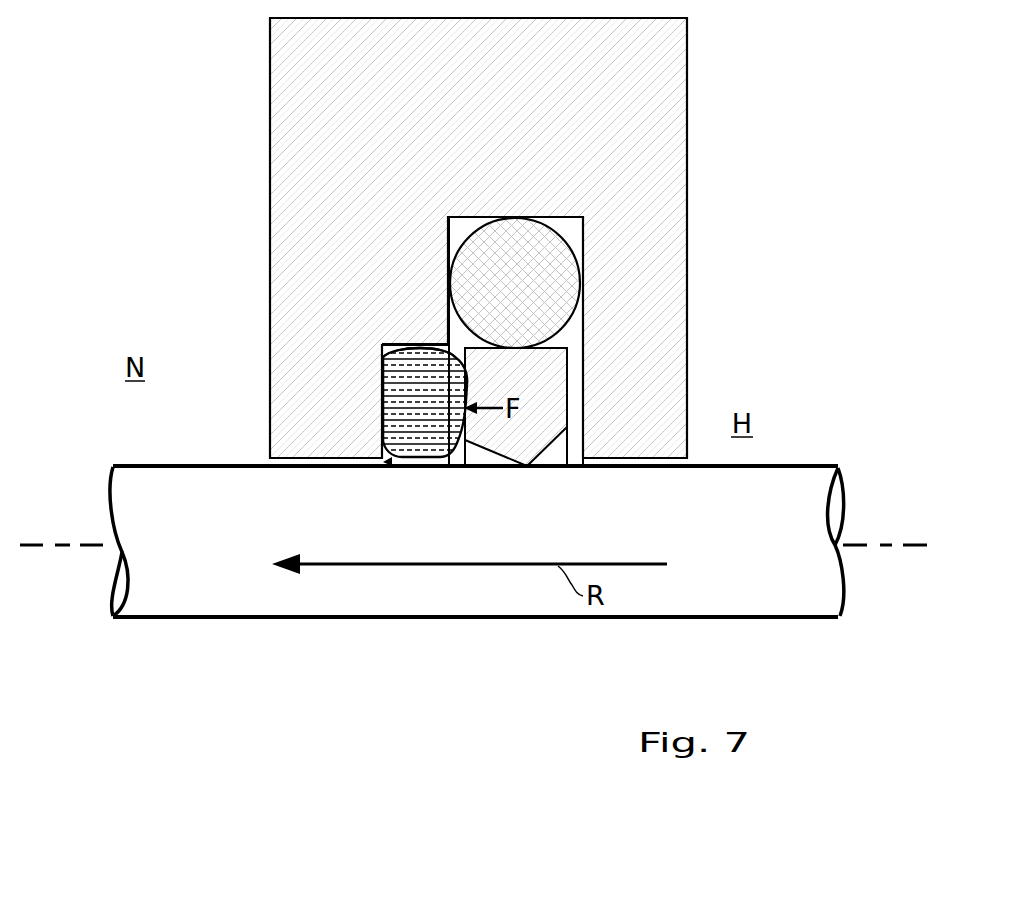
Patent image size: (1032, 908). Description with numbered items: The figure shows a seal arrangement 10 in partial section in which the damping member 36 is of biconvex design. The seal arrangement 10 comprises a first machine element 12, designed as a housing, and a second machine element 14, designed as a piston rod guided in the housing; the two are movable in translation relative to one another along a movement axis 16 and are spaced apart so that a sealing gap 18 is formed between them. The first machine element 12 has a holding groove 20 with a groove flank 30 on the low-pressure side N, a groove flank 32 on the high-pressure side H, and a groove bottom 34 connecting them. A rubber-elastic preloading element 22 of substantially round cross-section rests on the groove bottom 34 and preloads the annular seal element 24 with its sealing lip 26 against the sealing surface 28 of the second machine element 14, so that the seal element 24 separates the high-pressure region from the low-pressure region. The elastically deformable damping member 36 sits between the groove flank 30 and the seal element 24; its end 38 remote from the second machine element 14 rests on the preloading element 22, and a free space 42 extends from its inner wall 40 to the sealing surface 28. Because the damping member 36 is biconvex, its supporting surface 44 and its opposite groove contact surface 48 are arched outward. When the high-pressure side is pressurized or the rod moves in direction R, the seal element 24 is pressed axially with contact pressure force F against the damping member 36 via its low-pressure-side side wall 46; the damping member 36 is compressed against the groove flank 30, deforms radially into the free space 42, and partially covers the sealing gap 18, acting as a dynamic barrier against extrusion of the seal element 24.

The seal arrangement 10 is at (760, 146).
The first machine element 12 is at (470, 162).
The second machine element 14 is at (747, 574).
The movement axis 16 is at (60, 545).
The sealing gap 18 is at (310, 462).
The holding groove 20 is at (572, 368).
The preloading element 22 is at (500, 297).
The seal element 24 is at (515, 390).
The sealing lip 26 is at (514, 450).
The sealing surface 28 is at (745, 466).
The groove flank arranged on the low-pressure side 30 is at (395, 420).
The groove flank arranged on the high-pressure side 32 is at (573, 407).
The groove bottom 34 is at (583, 220).
The damping member 36 is at (425, 402).
The end remote from the second machine element 38 is at (473, 377).
The inner wall 40 is at (420, 423).
The free space 42 is at (367, 465).
The supporting surface 44 is at (457, 360).
The low-pressure-side side wall 46 is at (468, 440).
The groove contact surface 48 is at (382, 398).